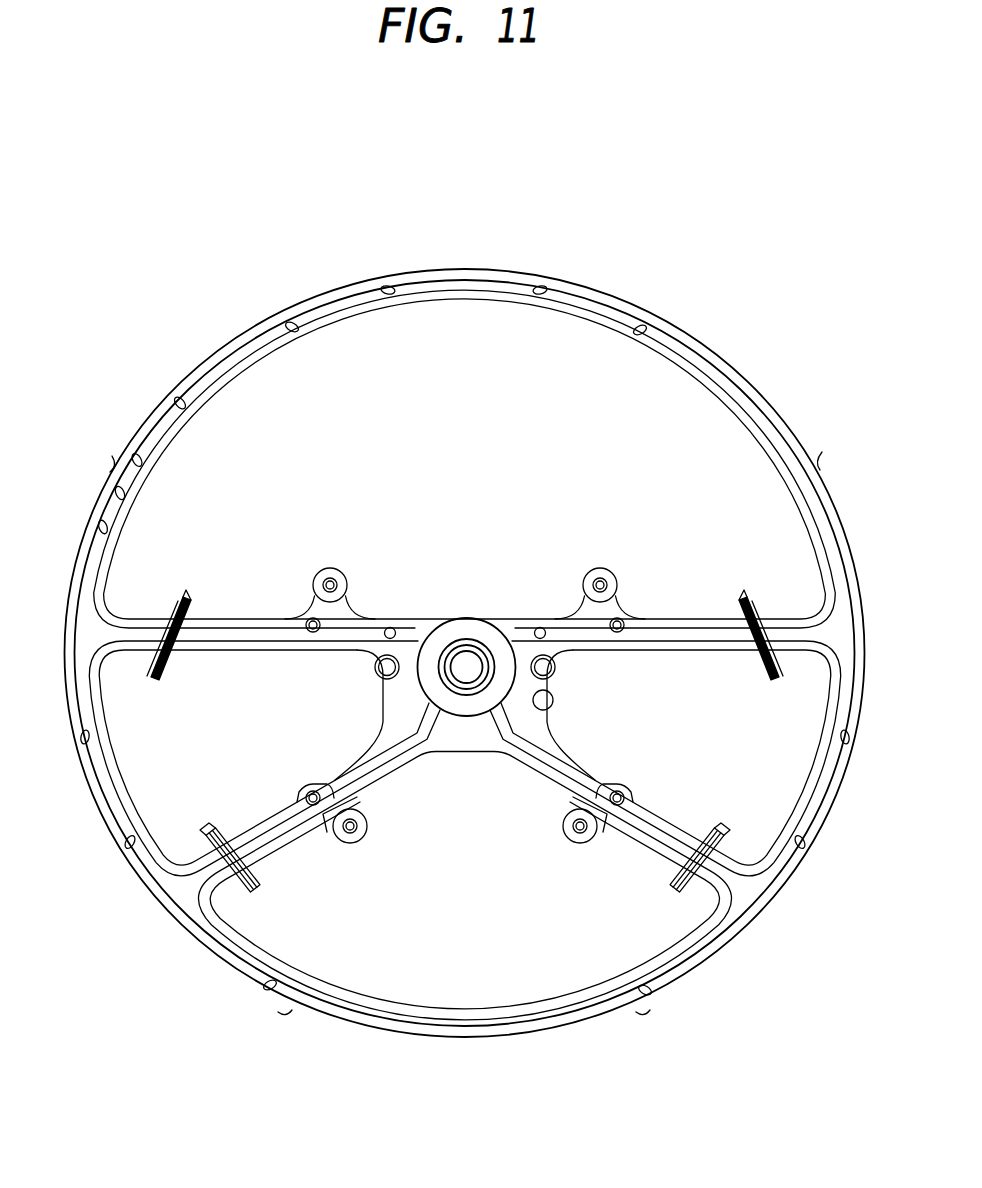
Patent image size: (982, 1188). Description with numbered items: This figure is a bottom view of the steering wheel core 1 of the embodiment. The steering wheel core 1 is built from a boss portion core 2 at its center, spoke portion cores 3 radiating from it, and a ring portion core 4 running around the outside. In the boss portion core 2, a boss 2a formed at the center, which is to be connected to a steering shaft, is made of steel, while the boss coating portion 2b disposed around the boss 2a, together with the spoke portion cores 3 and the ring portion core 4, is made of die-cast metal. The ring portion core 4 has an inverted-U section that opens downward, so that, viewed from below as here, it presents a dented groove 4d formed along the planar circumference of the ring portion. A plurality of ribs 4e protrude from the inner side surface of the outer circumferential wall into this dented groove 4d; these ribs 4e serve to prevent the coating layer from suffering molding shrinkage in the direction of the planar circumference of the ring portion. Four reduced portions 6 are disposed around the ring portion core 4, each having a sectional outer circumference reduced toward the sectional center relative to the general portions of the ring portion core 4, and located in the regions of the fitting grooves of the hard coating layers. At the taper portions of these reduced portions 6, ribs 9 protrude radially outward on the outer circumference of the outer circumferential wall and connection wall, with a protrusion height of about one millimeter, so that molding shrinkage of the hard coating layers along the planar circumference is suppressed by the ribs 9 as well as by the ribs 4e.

The steering wheel core 1 is at (643, 237).
The boss portion core 2 is at (517, 492).
The boss 2a is at (467, 653).
The boss coating portion 2b is at (494, 632).
The spoke portion core 3 is at (228, 633).
The ring portion core 4 is at (350, 284).
The dented groove 4d is at (458, 286).
The rib 4e is at (388, 292).
The reduced portion 6 is at (120, 438).
The rib 9 is at (116, 472).